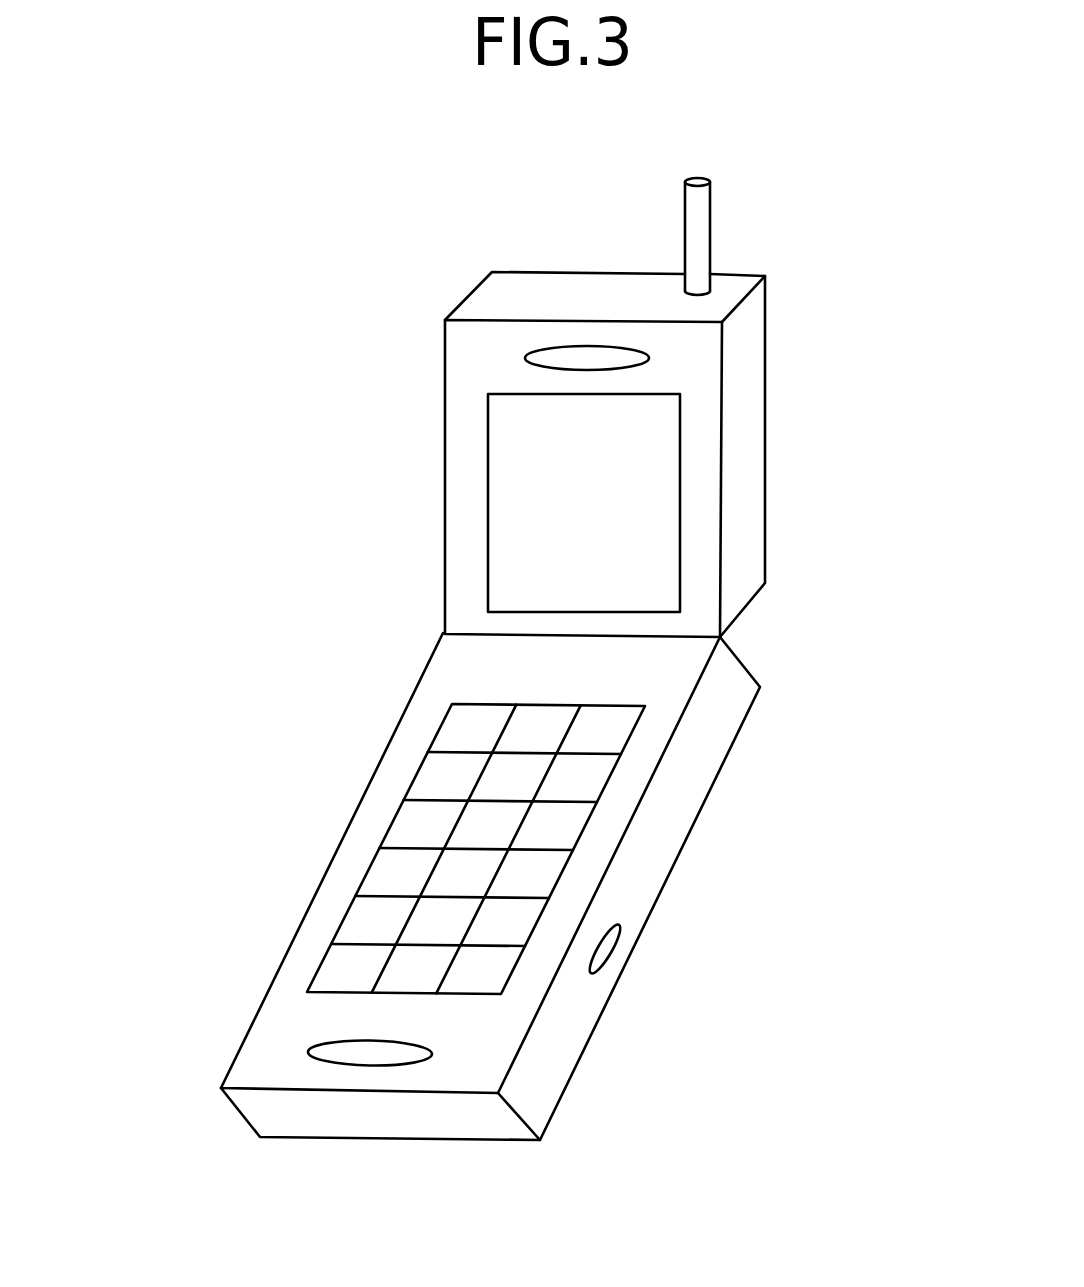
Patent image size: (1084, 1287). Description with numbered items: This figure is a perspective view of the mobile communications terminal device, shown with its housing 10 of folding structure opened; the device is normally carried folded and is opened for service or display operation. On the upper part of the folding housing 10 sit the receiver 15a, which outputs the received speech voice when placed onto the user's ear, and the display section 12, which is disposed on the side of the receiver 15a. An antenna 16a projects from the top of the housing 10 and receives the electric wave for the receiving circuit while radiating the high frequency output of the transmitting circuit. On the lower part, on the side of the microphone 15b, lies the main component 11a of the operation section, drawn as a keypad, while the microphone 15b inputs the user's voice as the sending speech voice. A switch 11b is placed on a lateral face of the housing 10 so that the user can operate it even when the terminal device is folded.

The housing 10 is at (762, 408).
The main component 11a is at (413, 787).
The switch 11b is at (613, 942).
The display section 12 is at (487, 495).
The receiver 15a is at (583, 347).
The microphone 15b is at (307, 1052).
The antenna 16a is at (710, 208).